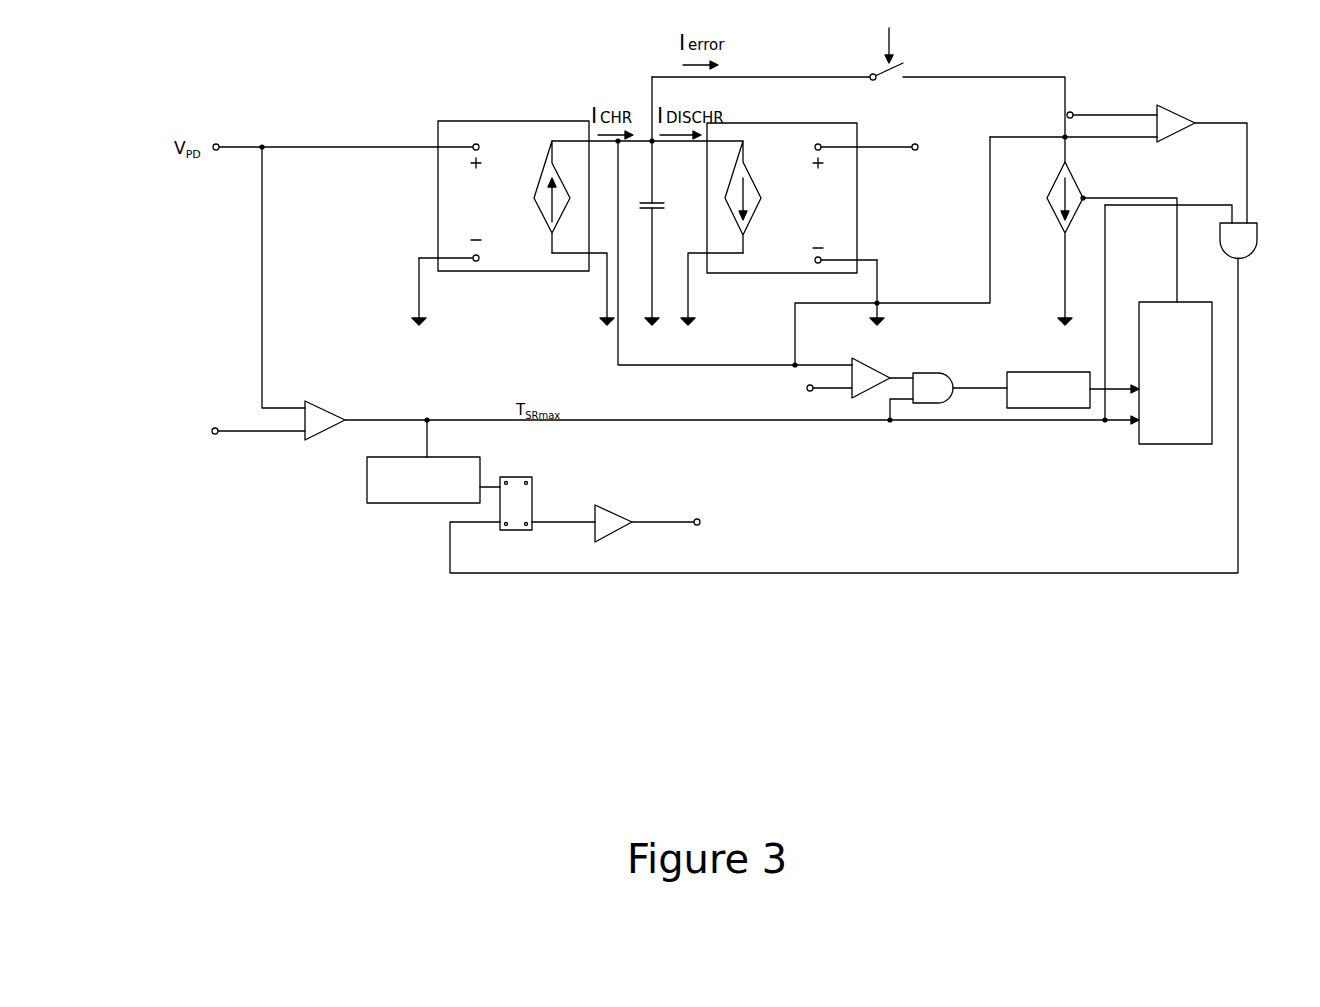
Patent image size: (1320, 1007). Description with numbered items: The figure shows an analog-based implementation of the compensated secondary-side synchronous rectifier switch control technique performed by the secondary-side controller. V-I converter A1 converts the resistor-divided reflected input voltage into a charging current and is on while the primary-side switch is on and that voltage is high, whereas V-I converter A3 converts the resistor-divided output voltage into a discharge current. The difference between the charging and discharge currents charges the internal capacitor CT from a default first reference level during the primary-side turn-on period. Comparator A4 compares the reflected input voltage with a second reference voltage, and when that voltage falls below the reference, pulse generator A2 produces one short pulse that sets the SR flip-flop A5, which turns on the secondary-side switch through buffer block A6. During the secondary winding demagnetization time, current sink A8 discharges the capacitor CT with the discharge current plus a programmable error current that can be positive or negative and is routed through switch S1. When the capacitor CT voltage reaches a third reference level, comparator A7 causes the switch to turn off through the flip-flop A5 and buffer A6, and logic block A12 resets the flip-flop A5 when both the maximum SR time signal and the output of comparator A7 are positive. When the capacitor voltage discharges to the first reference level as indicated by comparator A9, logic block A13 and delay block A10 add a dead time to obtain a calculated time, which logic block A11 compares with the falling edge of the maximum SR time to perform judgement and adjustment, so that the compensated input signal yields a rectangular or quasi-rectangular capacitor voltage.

The V-I converter A1 is at (479, 223).
The pulse generator A2 is at (433, 461).
The V-I converter A3 is at (822, 224).
The comparator A4 is at (257, 297).
The SR flip-flop A5 is at (510, 506).
The buffer block A6 is at (683, 511).
The comparator A7 is at (1021, 222).
The current sink A8 is at (1120, 291).
The comparator A9 is at (765, 272).
The delay block A10 is at (1073, 375).
The logic block A11 is at (1175, 391).
The logic block A12 is at (871, 398).
The logic block A13 is at (947, 380).
The internal capacitor CT is at (662, 201).
The switch S1 is at (884, 55).